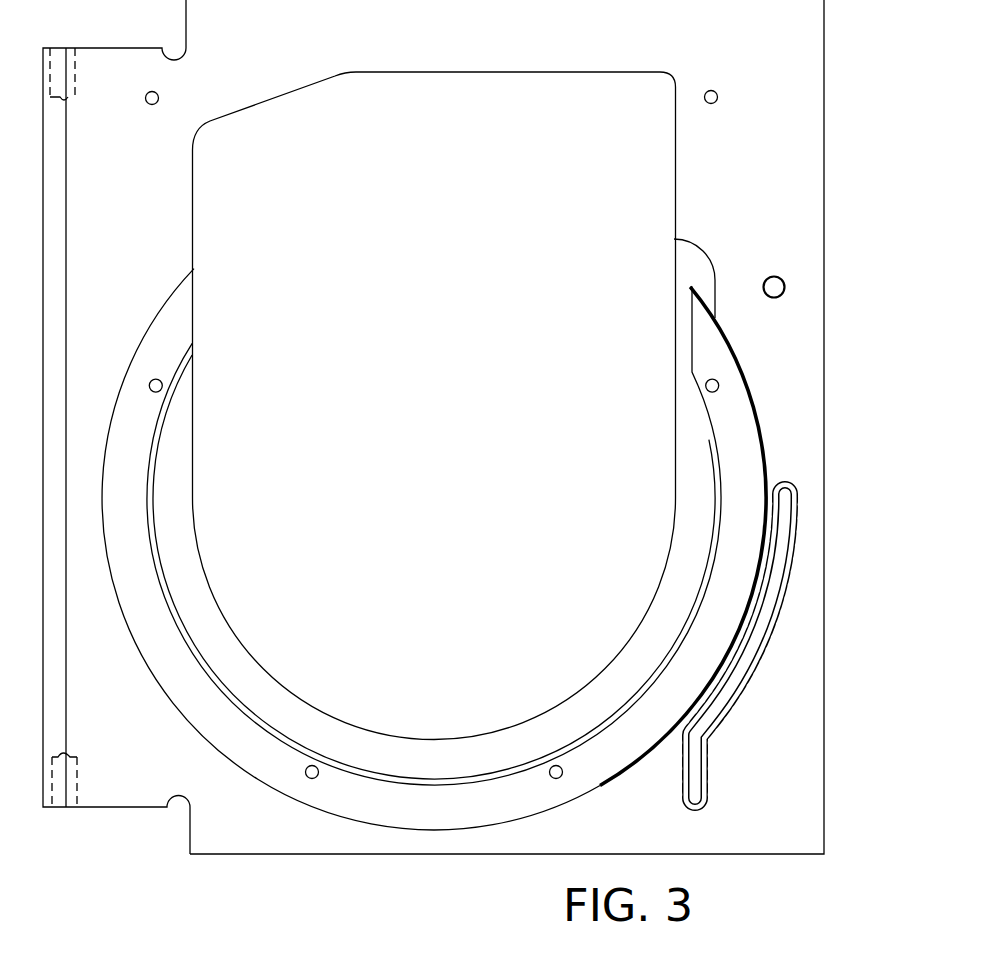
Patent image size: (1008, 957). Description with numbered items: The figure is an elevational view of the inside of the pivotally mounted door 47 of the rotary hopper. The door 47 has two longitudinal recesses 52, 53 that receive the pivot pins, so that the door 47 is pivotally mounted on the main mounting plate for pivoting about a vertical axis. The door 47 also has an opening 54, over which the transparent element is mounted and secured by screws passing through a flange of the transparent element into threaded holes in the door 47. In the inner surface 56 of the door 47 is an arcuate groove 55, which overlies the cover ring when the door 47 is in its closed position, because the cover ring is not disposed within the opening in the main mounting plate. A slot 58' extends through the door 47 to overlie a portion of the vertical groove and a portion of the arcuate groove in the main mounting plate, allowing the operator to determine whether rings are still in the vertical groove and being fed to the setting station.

The door 47 is at (464, 427).
The longitudinal recess 52 is at (70, 97).
The longitudinal recess 53 is at (78, 758).
The opening 54 is at (252, 108).
The arcuate groove 55 is at (722, 335).
The inner surface 56 is at (769, 802).
The slot 58' is at (752, 646).